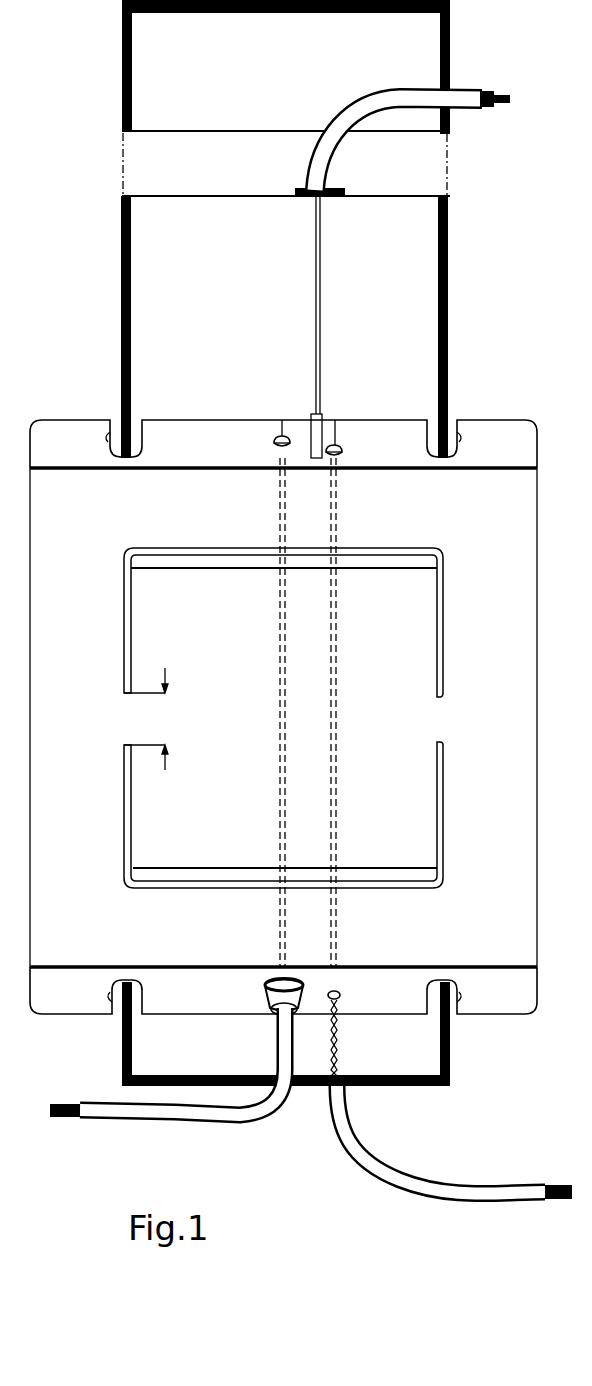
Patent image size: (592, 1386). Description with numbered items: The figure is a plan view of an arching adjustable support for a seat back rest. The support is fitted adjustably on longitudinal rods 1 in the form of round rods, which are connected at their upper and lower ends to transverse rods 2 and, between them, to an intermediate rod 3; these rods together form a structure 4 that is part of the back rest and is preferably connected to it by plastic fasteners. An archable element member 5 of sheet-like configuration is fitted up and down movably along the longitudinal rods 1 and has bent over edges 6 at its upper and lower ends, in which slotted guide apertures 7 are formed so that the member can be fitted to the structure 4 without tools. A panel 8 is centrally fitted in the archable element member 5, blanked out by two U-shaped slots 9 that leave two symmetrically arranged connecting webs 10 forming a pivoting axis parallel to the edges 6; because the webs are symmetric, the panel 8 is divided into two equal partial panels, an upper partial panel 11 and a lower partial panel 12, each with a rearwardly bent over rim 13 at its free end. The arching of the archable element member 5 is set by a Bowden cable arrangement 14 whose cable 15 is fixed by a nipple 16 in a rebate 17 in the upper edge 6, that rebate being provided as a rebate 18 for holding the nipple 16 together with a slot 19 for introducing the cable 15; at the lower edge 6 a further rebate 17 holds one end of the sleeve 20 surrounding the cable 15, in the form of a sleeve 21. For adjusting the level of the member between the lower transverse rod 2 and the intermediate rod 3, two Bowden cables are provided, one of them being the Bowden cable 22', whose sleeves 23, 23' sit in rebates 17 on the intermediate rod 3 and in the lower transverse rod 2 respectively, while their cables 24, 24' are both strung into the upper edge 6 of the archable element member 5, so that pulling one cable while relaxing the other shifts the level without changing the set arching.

The longitudinal rods 1 is at (121, 262).
The transverse rods 2 is at (152, 17).
The intermediate rod 3 is at (392, 176).
The structure 4 is at (451, 365).
The archable element member 5 is at (464, 518).
The bent over edges 6 is at (182, 454).
The slotted guide apertures 7 is at (112, 428).
The panel 8 is at (185, 719).
The U-shaped slots 9 is at (445, 632).
The connecting webs 10 is at (438, 720).
The upper partial panel 11 is at (190, 601).
The lower partial panel 12 is at (212, 849).
The bent over rim 13 is at (257, 565).
The Bowden cable arrangement 14 is at (235, 1148).
The cable 15 is at (281, 758).
The nipple 16 is at (280, 440).
The rebate 17 is at (300, 189).
The rebate 18 is at (345, 993).
The slot 19 is at (337, 428).
The sleeve 20 is at (165, 1133).
The sleeve 21 is at (265, 995).
The Bowden cable 22' is at (438, 608).
The sleeve 23 is at (398, 114).
The sleeve 23' is at (415, 1140).
The cable 24 is at (345, 305).
The cable 24' is at (367, 1038).